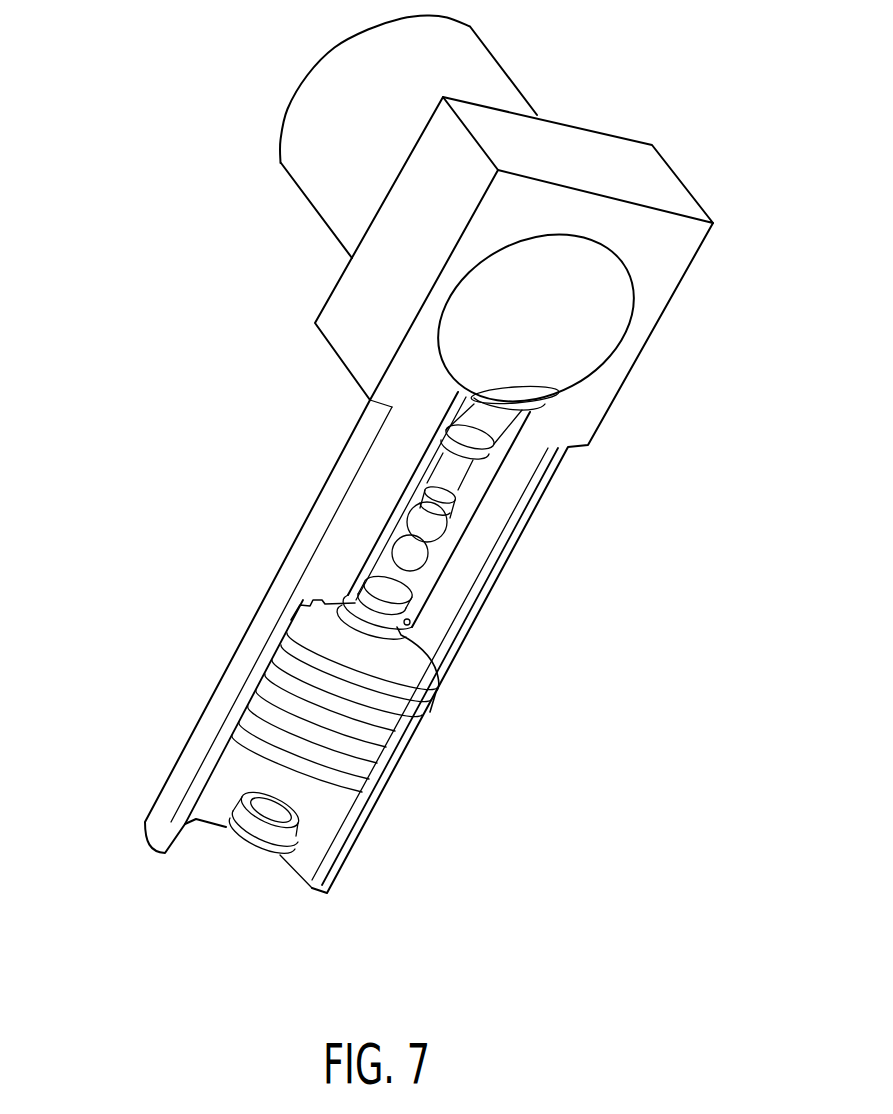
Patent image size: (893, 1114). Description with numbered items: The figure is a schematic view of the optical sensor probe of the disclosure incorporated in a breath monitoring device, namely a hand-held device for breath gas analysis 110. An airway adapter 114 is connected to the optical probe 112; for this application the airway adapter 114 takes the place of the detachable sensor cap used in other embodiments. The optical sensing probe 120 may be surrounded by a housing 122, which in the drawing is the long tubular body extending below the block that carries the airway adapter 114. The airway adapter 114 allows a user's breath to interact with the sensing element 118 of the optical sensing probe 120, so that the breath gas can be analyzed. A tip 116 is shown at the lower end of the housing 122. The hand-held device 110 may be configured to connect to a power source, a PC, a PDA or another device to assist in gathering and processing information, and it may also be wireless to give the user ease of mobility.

The hand-held device for breath gas analysis 110 is at (188, 633).
The optical probe 112 is at (540, 555).
The airway adapter 114 is at (570, 283).
The end tip 116 is at (270, 827).
The sensing element 118 is at (560, 390).
The optical sensing probe 120 is at (427, 540).
The housing 122 is at (322, 488).